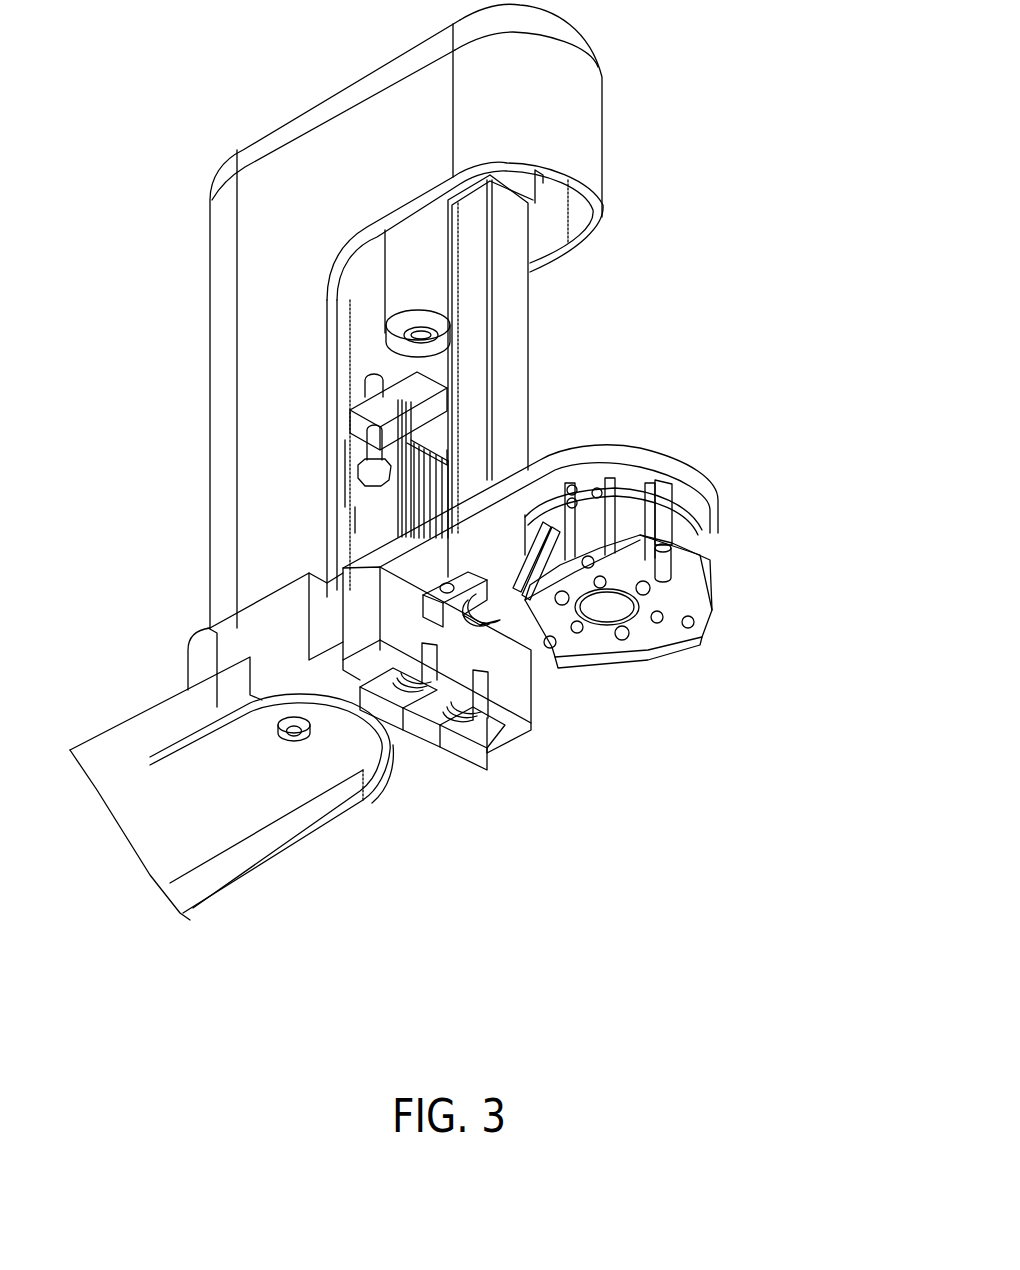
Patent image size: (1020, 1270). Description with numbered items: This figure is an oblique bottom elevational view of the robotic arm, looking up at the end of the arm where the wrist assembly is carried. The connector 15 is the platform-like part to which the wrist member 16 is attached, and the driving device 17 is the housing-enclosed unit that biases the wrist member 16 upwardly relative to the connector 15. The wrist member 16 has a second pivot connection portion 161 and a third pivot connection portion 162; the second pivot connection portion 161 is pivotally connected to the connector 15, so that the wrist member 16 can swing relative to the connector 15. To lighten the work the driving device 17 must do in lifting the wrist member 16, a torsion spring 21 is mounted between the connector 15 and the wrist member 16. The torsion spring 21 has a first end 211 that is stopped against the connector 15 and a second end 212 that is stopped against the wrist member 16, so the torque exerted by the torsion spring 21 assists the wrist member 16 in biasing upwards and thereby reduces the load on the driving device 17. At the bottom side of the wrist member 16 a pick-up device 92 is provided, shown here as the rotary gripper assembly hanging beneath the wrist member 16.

The connector 15 is at (425, 750).
The wrist member 16 is at (682, 458).
The driving device 17 is at (533, 417).
The torsion spring 21 is at (468, 727).
The first end 211 is at (440, 698).
The second end 212 is at (490, 713).
The second pivot connection portion 161 is at (485, 720).
The third pivot connection portion 162 is at (510, 645).
The pick-up device 92 is at (713, 585).